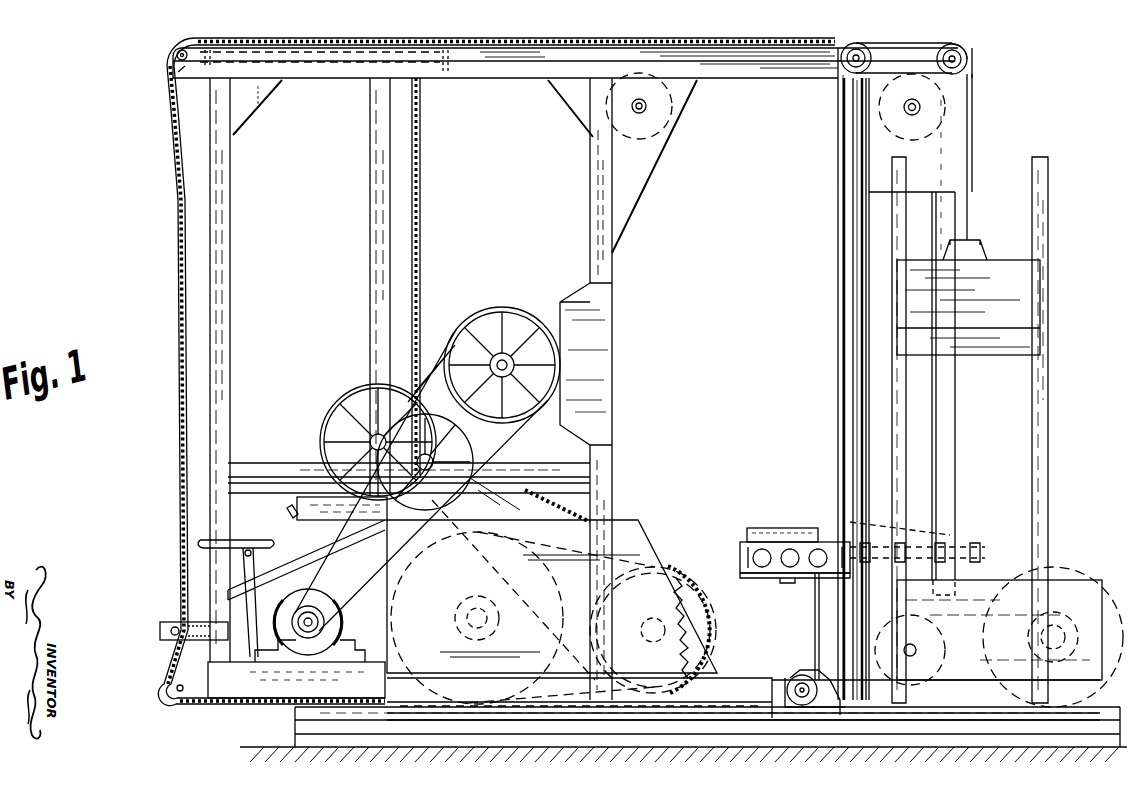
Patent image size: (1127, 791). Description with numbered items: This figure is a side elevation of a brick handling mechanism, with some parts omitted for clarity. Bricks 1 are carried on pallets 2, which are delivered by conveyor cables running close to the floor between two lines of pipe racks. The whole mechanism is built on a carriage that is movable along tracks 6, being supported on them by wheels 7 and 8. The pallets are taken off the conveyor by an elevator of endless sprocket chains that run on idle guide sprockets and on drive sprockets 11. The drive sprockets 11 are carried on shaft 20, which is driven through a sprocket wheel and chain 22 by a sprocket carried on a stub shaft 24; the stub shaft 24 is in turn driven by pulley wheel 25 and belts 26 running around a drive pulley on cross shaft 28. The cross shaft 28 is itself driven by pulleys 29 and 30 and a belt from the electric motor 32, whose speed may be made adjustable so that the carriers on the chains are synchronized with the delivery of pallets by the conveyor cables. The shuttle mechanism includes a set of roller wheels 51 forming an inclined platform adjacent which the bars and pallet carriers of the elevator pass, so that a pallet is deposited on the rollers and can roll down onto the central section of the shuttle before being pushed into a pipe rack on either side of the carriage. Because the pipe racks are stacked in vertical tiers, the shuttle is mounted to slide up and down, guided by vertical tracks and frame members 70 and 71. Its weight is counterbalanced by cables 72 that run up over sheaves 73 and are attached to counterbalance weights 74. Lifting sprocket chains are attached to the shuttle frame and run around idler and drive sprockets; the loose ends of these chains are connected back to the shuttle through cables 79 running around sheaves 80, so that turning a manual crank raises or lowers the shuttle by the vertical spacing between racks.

The bricks 1 is at (772, 515).
The pallets 2 is at (745, 543).
The tracks 6 is at (293, 712).
The wheels 7 is at (520, 550).
The wheels 8 is at (1070, 580).
The drive sprockets 11 is at (712, 605).
The shaft 20 is at (722, 618).
The chain 22 is at (697, 532).
The stub shaft 24 is at (368, 395).
The pulley wheel 25 is at (488, 450).
The belts 26 is at (510, 425).
The cross shaft 28 is at (535, 340).
The pulley 29 is at (548, 378).
The pulley 30 is at (318, 612).
The electric motor 32 is at (325, 648).
The roller wheels 51 is at (470, 498).
The vertical tracks and frame members 70 is at (858, 525).
The vertical tracks and frame members 71 is at (900, 504).
The cables 72 is at (835, 468).
The sheaves 73 is at (978, 52).
The counterbalance weights 74 is at (985, 262).
The cables 79 is at (815, 606).
The sheaves 80 is at (802, 678).